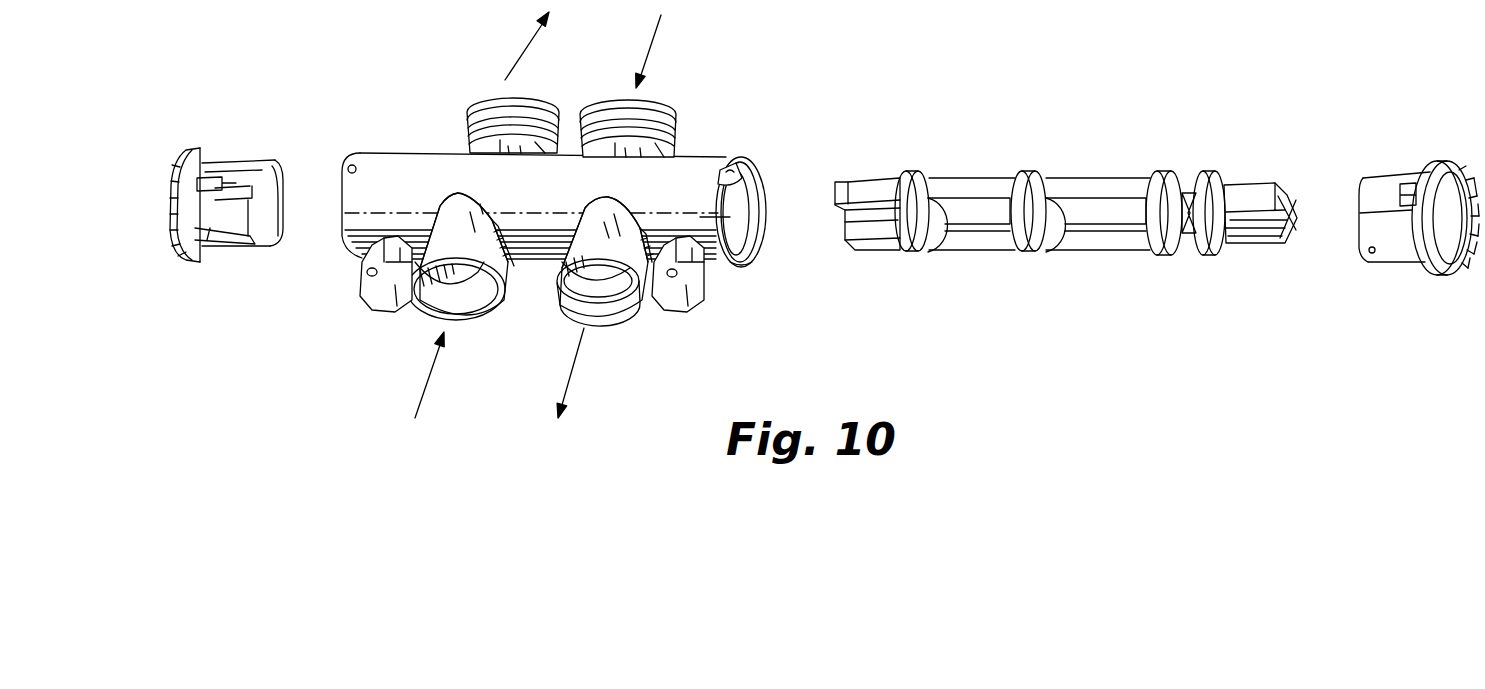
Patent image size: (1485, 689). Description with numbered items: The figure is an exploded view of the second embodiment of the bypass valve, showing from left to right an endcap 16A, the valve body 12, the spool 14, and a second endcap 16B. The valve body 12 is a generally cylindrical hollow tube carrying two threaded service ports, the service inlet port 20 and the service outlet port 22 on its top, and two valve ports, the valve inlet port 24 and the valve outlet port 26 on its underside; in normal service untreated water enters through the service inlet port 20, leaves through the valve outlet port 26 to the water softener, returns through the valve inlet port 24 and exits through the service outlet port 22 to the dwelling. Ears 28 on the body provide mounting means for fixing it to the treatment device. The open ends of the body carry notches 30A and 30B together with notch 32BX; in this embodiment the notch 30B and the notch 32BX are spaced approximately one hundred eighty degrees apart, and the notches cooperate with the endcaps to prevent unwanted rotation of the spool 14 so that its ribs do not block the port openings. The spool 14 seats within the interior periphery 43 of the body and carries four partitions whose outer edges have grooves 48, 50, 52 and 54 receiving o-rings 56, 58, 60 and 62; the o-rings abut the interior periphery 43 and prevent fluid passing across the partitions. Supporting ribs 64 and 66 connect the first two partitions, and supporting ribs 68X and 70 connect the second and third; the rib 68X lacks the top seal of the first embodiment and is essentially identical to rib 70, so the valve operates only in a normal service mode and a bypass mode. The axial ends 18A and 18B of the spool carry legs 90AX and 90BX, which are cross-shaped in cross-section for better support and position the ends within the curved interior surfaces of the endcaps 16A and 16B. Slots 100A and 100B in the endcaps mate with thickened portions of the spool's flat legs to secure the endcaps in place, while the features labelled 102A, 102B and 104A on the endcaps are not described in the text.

The valve body 12 is at (547, 211).
The spool 14 is at (1072, 237).
The endcap 16A is at (232, 208).
The endcap 16B is at (1406, 236).
The axial end 18A is at (859, 202).
The axial end 18B is at (1245, 246).
The service inlet port 20 is at (658, 118).
The service outlet port 22 is at (490, 100).
The valve inlet port 24 is at (482, 322).
The valve outlet port 26 is at (614, 330).
The ears 28 is at (366, 300).
The notch 30A is at (338, 178).
The notch 30B is at (736, 160).
The notch 32BX is at (754, 250).
The interior periphery 43 is at (746, 226).
The groove 48 is at (918, 172).
The groove 50 is at (1040, 172).
The groove 52 is at (1162, 172).
The groove 54 is at (1212, 172).
The o-ring 56 is at (923, 171).
The o-ring 58 is at (1053, 171).
The o-ring 60 is at (1186, 173).
The o-ring 62 is at (1259, 186).
The supporting rib 64 is at (971, 216).
The supporting rib 66 is at (955, 235).
The supporting rib 68X is at (1094, 219).
The supporting rib 70 is at (1076, 236).
The leg 90AX is at (866, 234).
The leg 90BX is at (1292, 242).
The slot 100A is at (176, 202).
The slot 100B is at (1408, 216).
The cap key slot 102A is at (200, 160).
The cap key slot 102B is at (1400, 190).
The cap lower slot 104A is at (232, 240).